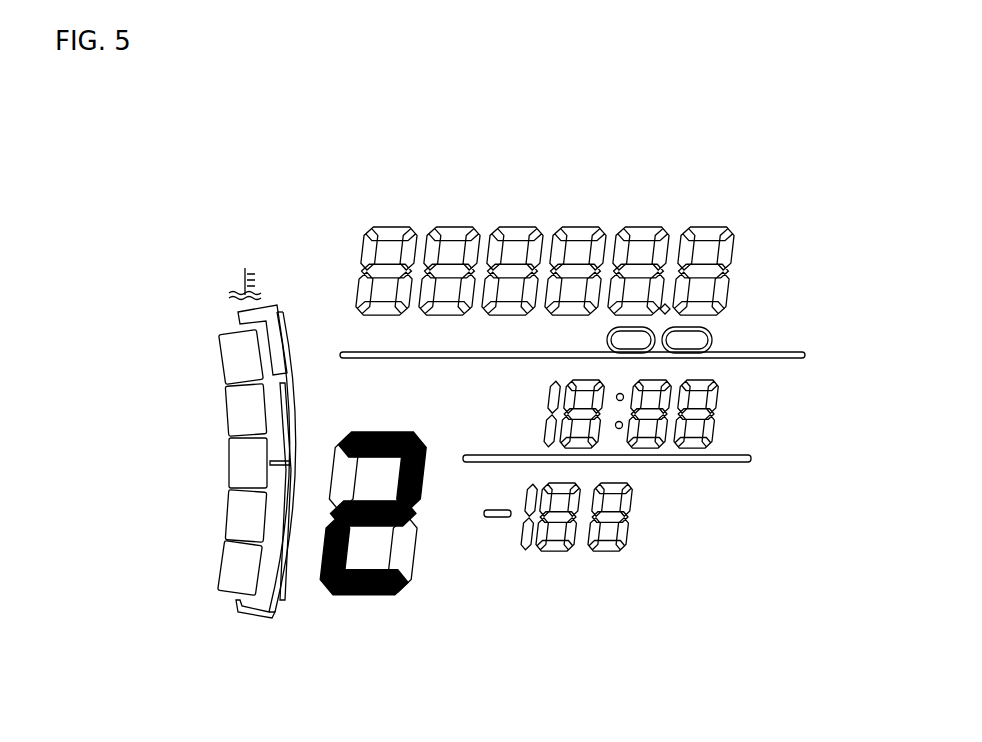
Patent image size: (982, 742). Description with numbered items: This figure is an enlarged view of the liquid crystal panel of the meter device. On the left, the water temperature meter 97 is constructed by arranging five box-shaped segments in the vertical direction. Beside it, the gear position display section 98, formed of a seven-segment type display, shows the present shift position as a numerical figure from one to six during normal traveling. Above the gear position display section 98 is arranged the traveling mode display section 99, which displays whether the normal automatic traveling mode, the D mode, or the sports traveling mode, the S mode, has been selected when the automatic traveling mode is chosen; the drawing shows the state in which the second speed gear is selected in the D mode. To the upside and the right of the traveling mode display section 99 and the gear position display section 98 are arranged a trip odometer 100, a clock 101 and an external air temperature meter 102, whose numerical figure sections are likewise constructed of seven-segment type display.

The water temperature meter 97 is at (214, 462).
The gear position display section 98 is at (360, 602).
The traveling mode display section 99 is at (325, 375).
The trip odometer 100 is at (597, 210).
The clock 101 is at (742, 420).
The external air temperature meter 102 is at (557, 566).